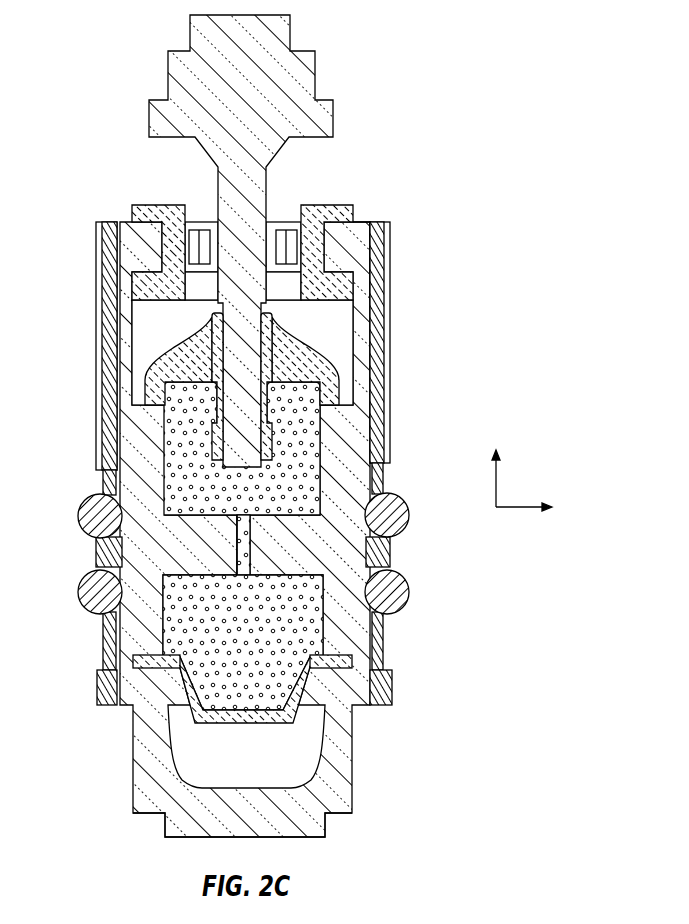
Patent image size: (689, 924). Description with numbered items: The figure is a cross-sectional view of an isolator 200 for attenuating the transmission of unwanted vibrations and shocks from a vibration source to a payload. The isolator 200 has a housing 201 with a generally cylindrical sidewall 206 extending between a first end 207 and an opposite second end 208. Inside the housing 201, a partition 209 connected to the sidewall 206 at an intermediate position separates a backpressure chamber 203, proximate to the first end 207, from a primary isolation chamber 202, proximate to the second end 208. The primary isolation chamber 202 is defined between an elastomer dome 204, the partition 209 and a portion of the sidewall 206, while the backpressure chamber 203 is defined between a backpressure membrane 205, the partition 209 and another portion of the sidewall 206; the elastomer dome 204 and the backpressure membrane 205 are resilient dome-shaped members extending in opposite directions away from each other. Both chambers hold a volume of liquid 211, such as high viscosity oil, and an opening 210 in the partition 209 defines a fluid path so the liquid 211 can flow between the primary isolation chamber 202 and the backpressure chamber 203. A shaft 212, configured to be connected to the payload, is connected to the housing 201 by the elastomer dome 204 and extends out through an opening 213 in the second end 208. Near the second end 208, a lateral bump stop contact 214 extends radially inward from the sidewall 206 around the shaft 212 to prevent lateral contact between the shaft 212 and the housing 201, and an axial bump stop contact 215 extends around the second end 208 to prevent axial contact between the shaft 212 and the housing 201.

The isolator 200 is at (532, 268).
The housing 201 is at (93, 483).
The primary isolation chamber 202 is at (297, 442).
The backpressure chamber 203 is at (297, 622).
The elastomer dome 204 is at (195, 353).
The backpressure membrane 205 is at (298, 692).
The sidewall 206 is at (388, 372).
The first end 207 is at (187, 837).
The second end 208 is at (375, 225).
The partition 209 is at (217, 530).
The opening 210 is at (241, 528).
The liquid 211 is at (187, 487).
The shaft 212 is at (240, 199).
The opening 213 is at (207, 248).
The lateral bump stop contact 214 is at (313, 247).
The axial bump stop contact 215 is at (333, 212).